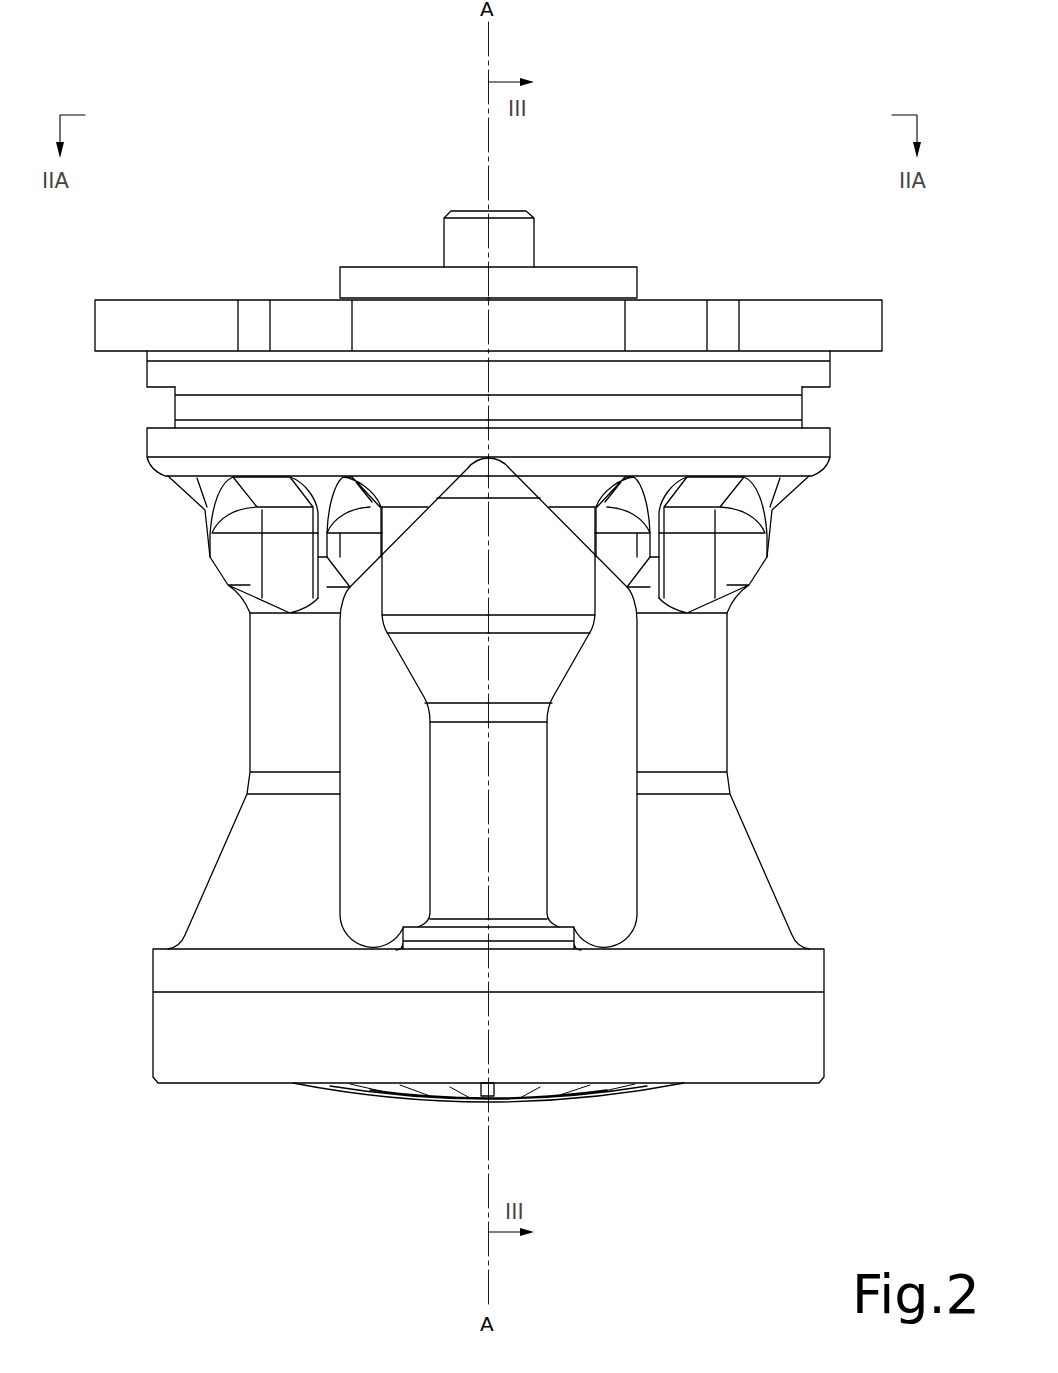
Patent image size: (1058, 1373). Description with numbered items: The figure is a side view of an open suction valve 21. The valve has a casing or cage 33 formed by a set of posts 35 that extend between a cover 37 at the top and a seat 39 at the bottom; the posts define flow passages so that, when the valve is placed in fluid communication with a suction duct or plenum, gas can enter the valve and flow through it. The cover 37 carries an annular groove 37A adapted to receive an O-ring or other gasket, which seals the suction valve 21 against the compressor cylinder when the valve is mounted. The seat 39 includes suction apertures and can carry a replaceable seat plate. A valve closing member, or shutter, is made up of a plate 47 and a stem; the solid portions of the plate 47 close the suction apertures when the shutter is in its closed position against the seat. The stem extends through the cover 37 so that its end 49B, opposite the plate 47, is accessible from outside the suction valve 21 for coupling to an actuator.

The suction valve 21 is at (850, 650).
The casing or cage 33 is at (742, 675).
The posts 35 is at (263, 698).
The cover 37 is at (853, 398).
The annular groove 37A is at (822, 425).
The seat 39 is at (863, 945).
The plate 47 is at (626, 1107).
The end of the stem 49B is at (517, 237).